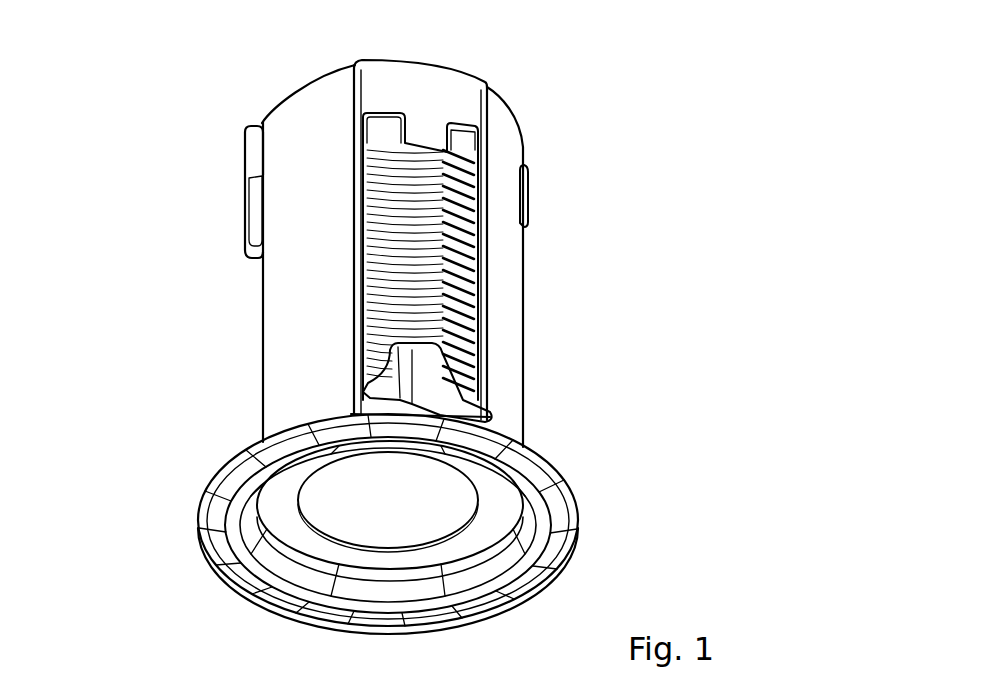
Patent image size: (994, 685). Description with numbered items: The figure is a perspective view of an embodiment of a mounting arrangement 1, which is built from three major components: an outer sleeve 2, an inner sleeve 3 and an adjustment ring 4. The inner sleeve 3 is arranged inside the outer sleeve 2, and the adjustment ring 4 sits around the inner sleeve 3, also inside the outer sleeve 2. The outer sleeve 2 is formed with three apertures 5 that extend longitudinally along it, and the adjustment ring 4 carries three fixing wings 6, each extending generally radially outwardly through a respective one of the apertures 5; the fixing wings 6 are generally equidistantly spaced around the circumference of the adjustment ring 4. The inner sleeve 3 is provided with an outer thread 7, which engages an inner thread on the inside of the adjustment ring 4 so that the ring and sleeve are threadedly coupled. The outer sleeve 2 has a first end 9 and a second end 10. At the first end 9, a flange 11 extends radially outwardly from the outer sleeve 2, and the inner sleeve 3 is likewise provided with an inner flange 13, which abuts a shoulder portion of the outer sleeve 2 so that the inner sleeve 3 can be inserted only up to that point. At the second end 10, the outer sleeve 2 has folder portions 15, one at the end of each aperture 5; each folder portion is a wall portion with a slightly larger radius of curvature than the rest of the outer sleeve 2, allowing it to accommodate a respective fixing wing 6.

The mounting arrangement 1 is at (426, 317).
The outer sleeve 2 is at (528, 158).
The inner sleeve 3 is at (487, 368).
The adjustment ring 4 is at (350, 405).
The apertures 5 is at (262, 273).
The fixing wings 6 is at (490, 413).
The outer thread 7 is at (489, 260).
The first end 9 is at (382, 524).
The second end 10 is at (355, 238).
The flange 11 is at (570, 518).
The inner flange 13 is at (217, 567).
The folder portions 15 is at (473, 90).